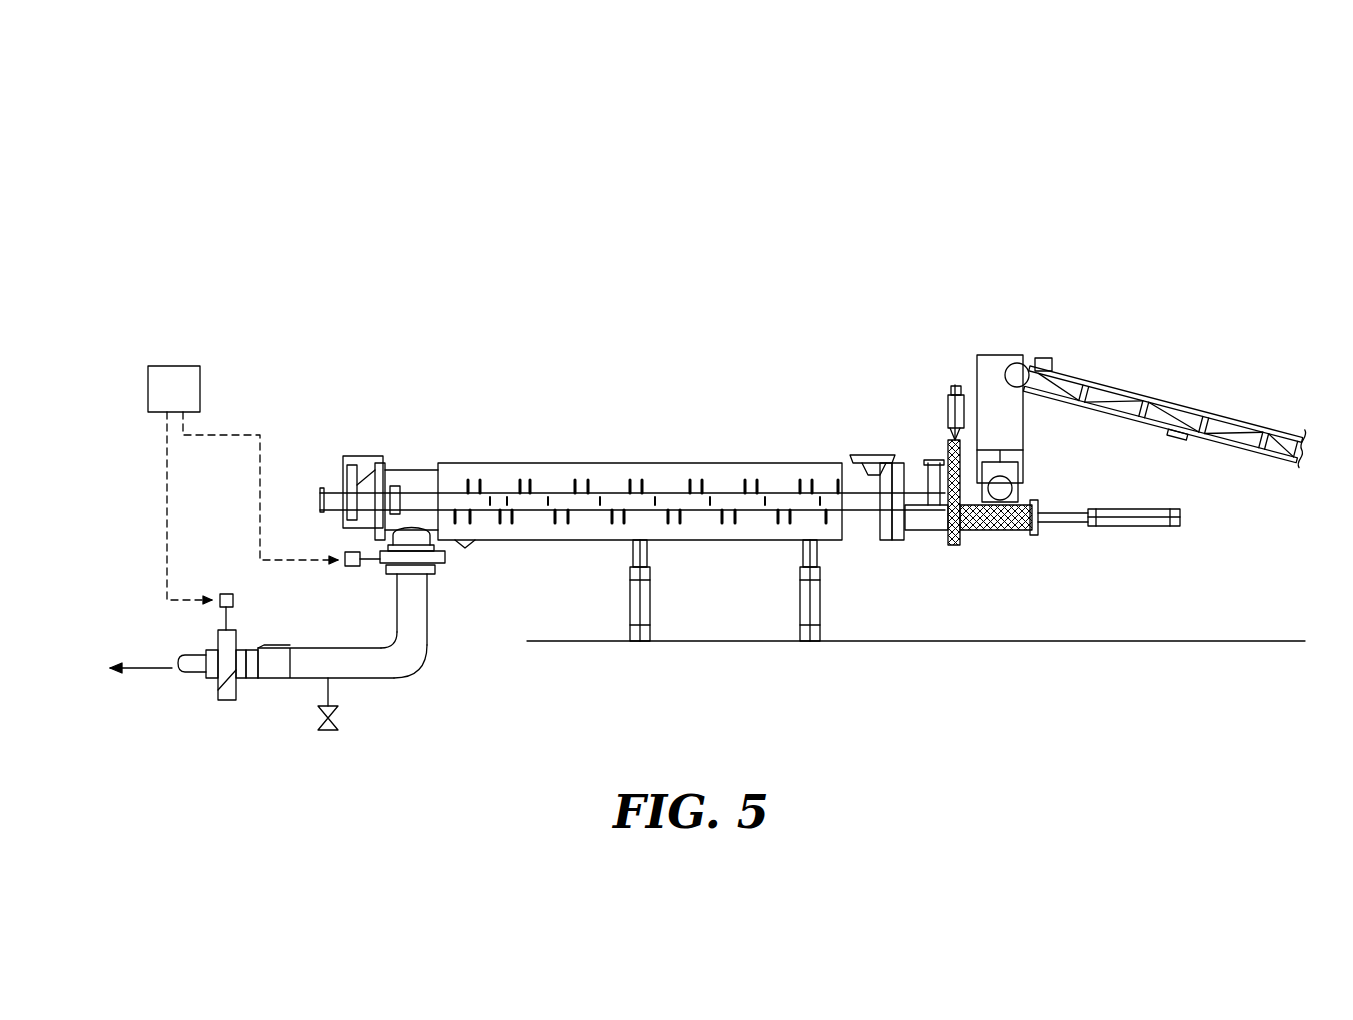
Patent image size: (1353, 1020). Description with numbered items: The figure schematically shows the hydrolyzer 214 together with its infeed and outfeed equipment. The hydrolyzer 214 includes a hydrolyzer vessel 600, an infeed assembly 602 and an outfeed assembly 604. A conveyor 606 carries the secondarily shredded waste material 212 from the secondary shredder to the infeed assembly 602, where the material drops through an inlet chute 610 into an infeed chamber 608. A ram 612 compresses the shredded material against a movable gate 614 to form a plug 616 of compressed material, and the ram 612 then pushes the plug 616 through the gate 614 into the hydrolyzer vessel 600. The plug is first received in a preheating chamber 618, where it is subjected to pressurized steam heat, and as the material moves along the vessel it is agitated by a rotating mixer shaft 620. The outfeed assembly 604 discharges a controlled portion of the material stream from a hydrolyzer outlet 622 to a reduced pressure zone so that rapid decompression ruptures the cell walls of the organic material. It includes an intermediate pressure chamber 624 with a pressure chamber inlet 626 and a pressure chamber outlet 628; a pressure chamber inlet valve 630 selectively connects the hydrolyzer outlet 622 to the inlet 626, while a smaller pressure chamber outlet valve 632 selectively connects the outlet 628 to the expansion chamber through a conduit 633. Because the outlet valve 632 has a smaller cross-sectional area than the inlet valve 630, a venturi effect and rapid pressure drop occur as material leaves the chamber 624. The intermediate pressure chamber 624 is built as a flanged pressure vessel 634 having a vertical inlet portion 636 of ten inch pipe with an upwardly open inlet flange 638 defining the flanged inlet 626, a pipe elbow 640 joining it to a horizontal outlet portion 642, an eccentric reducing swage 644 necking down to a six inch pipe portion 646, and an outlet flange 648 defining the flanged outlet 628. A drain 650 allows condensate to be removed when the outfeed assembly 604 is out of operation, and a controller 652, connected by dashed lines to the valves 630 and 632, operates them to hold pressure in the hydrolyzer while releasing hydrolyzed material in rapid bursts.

The hydrolyzer 214 is at (1098, 178).
The hydrolyzer vessel 600 is at (780, 372).
The rotating mixer shaft 620 is at (555, 496).
The pressure chamber inlet valve 630 is at (463, 546).
The infeed assembly 602 is at (940, 360).
The movable gate 614 is at (948, 410).
The preheating chamber 618 is at (935, 530).
The inlet chute 610 is at (993, 362).
The infeed chamber 608 is at (1022, 502).
The plug 616 is at (995, 532).
The ram 612 is at (1070, 510).
The secondarily shredded waste material 212 is at (1157, 392).
The conveyor 606 is at (1180, 395).
The controller 652 is at (197, 387).
The outfeed assembly 604 is at (370, 742).
The pressure chamber inlet 626 is at (392, 568).
The hydrolyzer outlet 622 is at (442, 571).
The inlet flange 638 is at (428, 576).
The vertical inlet portion 636 is at (414, 620).
The pipe elbow 640 is at (410, 659).
The flanged pressure vessel 634 is at (398, 682).
The eccentric reducing swage 644 is at (282, 652).
The six inch nominal diameter pipe portion 646 is at (250, 680).
The drain 650 is at (325, 720).
The intermediate pressure chamber 624 is at (219, 722).
The outlet portion 642 is at (310, 690).
The pressure chamber outlet valve 632 is at (226, 700).
The pressure chamber outlet 628 is at (155, 690).
The outlet flange 648 is at (216, 690).
The conduit 633 is at (140, 665).